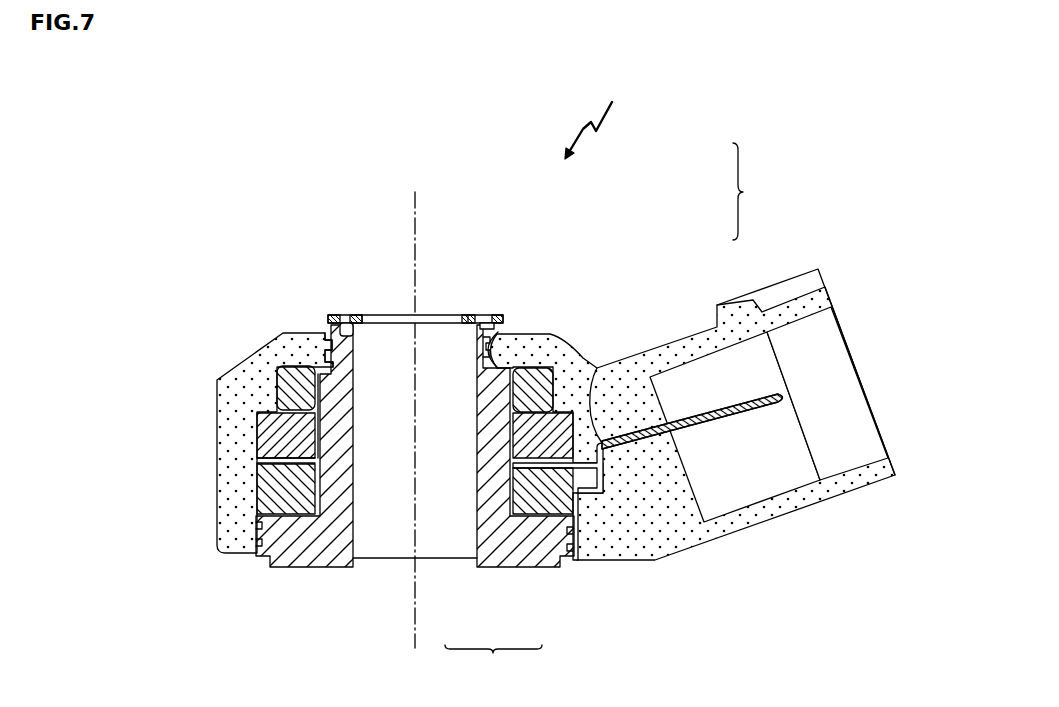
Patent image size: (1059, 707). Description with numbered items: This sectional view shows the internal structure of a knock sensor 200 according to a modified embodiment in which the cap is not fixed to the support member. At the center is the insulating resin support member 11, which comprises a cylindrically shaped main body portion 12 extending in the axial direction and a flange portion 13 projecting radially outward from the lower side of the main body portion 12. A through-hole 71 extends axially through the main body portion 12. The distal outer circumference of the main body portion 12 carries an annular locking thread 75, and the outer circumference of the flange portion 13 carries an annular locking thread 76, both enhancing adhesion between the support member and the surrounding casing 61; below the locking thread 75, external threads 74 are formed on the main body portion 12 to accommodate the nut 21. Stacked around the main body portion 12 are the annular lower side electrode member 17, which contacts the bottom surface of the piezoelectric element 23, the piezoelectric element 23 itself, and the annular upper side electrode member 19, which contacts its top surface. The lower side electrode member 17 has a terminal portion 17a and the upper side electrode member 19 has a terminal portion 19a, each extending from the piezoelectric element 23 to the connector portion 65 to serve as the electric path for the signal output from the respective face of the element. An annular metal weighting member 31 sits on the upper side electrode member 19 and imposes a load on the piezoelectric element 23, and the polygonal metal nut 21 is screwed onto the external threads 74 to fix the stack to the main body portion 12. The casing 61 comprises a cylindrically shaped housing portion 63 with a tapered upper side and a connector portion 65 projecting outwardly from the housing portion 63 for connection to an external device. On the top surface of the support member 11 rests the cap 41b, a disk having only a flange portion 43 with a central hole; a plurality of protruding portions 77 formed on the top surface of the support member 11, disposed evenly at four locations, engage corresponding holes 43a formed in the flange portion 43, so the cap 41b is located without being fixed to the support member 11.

The knock sensor 200 is at (642, 93).
The support member 11 is at (493, 665).
The main body portion 12 is at (480, 473).
The flange portion 13 is at (508, 543).
The lower side electrode member 17 is at (256, 514).
The terminal portion 17a is at (730, 427).
The upper side electrode member 19 is at (256, 466).
The terminal portion 19a is at (600, 368).
The nut 21 is at (280, 336).
The piezoelectric element 23 is at (256, 484).
The weighting member 31 is at (256, 416).
The cap 41b is at (435, 316).
The flange portion 43 is at (361, 318).
The holes 43a is at (345, 315).
The casing 61 is at (756, 191).
The housing portion 63 is at (536, 334).
The connector portion 65 is at (705, 347).
The through-hole 71 is at (360, 533).
The external threads 74 is at (303, 366).
The annular locking thread 75 is at (312, 333).
The annular locking thread 76 is at (256, 547).
The protruding portions 77 is at (350, 322).